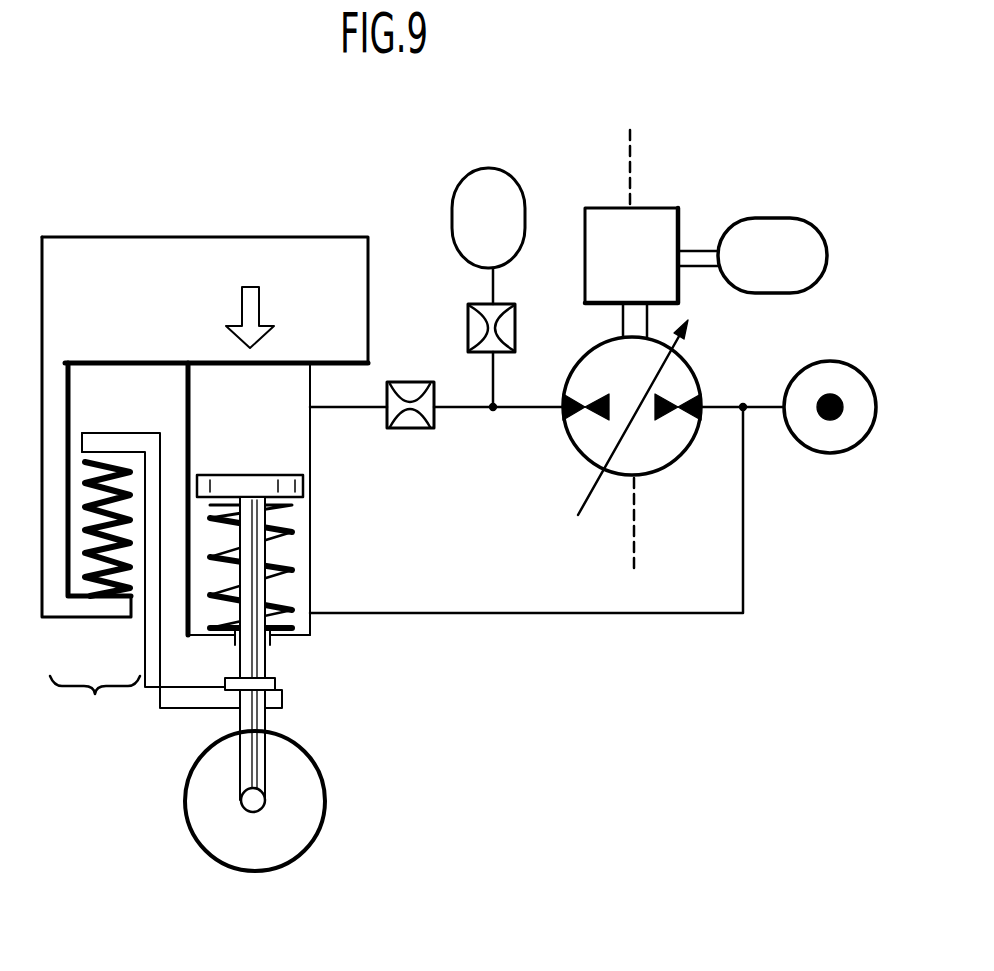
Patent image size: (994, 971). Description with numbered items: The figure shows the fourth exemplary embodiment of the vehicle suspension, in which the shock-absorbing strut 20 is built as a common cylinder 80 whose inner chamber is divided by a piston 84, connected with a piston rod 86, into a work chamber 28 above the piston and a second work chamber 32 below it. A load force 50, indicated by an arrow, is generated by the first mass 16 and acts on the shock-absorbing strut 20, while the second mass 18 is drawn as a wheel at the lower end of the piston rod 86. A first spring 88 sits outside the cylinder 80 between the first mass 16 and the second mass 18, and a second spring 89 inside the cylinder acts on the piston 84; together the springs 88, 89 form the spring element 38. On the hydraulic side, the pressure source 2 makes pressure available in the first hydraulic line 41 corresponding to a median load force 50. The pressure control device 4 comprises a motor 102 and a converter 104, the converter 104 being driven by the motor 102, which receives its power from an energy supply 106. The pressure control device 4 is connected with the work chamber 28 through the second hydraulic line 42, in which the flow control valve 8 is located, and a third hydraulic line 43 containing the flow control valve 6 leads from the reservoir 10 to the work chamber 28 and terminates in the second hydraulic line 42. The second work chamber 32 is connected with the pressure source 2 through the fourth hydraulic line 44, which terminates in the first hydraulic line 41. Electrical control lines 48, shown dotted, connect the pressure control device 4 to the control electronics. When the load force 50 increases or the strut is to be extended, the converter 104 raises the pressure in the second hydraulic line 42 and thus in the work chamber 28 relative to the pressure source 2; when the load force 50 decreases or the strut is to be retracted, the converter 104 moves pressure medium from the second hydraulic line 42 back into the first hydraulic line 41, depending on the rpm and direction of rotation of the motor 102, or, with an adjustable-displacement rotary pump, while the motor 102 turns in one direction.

The pressure source 2 is at (830, 435).
The pressure control device 4 is at (576, 331).
The flow control valve 6 is at (470, 321).
The flow control valve 8 is at (418, 346).
The reservoir 10 is at (488, 180).
The first mass 16 is at (108, 252).
The second mass 18 is at (314, 849).
The shock-absorbing strut 20 is at (330, 635).
The work chamber 28 is at (261, 499).
The second work chamber 32 is at (304, 583).
The spring element 38 is at (95, 705).
The first hydraulic line 41 is at (770, 403).
The second hydraulic line 42 is at (505, 410).
The third hydraulic line 43 is at (496, 380).
The fourth hydraulic line 44 is at (489, 613).
The electrical control lines 48 is at (632, 150).
The load force 50 is at (250, 302).
The cylinder 80 is at (306, 538).
The piston 84 is at (304, 488).
The piston rod 86 is at (258, 652).
The first spring 88 is at (86, 575).
The second spring 89 is at (208, 595).
The motor 102 is at (654, 216).
The converter 104 is at (678, 376).
The energy supply 106 is at (775, 236).